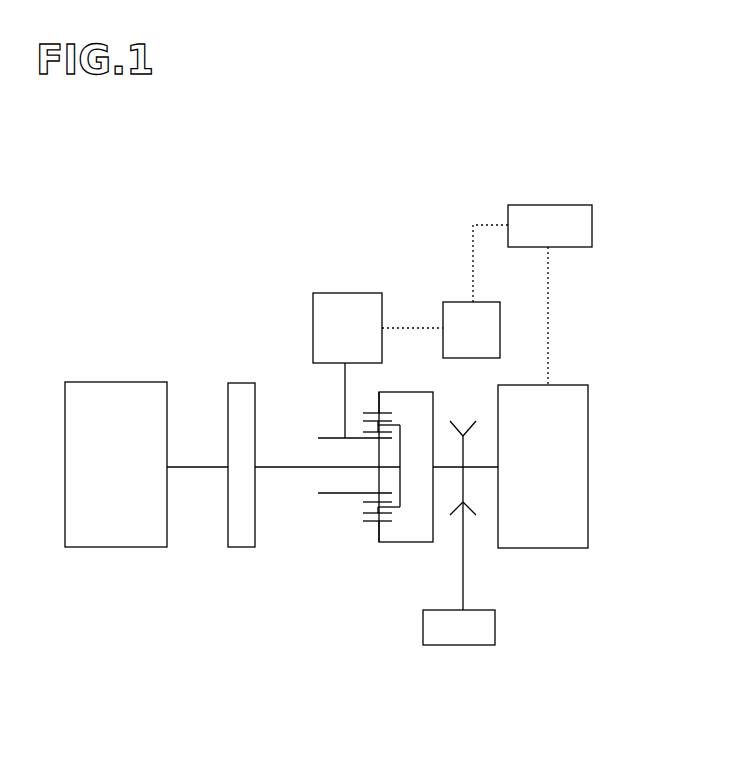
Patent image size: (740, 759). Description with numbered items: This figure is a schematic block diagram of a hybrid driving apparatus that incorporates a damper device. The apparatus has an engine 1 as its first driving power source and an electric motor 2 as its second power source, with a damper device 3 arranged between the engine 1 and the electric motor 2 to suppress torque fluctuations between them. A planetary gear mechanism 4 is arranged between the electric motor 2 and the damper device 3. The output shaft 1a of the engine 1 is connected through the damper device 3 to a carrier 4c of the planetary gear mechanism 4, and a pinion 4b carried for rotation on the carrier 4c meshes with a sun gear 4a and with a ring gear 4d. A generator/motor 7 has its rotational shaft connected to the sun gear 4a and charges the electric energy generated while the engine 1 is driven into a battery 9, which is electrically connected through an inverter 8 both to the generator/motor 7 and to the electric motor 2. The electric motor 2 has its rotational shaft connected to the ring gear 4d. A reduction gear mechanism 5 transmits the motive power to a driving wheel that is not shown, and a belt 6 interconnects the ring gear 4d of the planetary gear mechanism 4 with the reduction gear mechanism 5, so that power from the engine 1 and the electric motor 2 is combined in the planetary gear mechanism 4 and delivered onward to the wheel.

The engine 1 is at (124, 393).
The output shaft 1a is at (203, 467).
The electric motor 2 is at (575, 467).
The damper device 3 is at (247, 393).
The planetary gear mechanism 4 is at (393, 552).
The sun gear 4a is at (332, 494).
The pinion 4b is at (364, 510).
The carrier 4c is at (398, 447).
The ring gear 4d is at (384, 521).
The reduction gear mechanism 5 is at (490, 626).
The belt 6 is at (464, 579).
The generator/motor 7 is at (352, 302).
The inverter 8 is at (460, 310).
The battery 9 is at (585, 228).